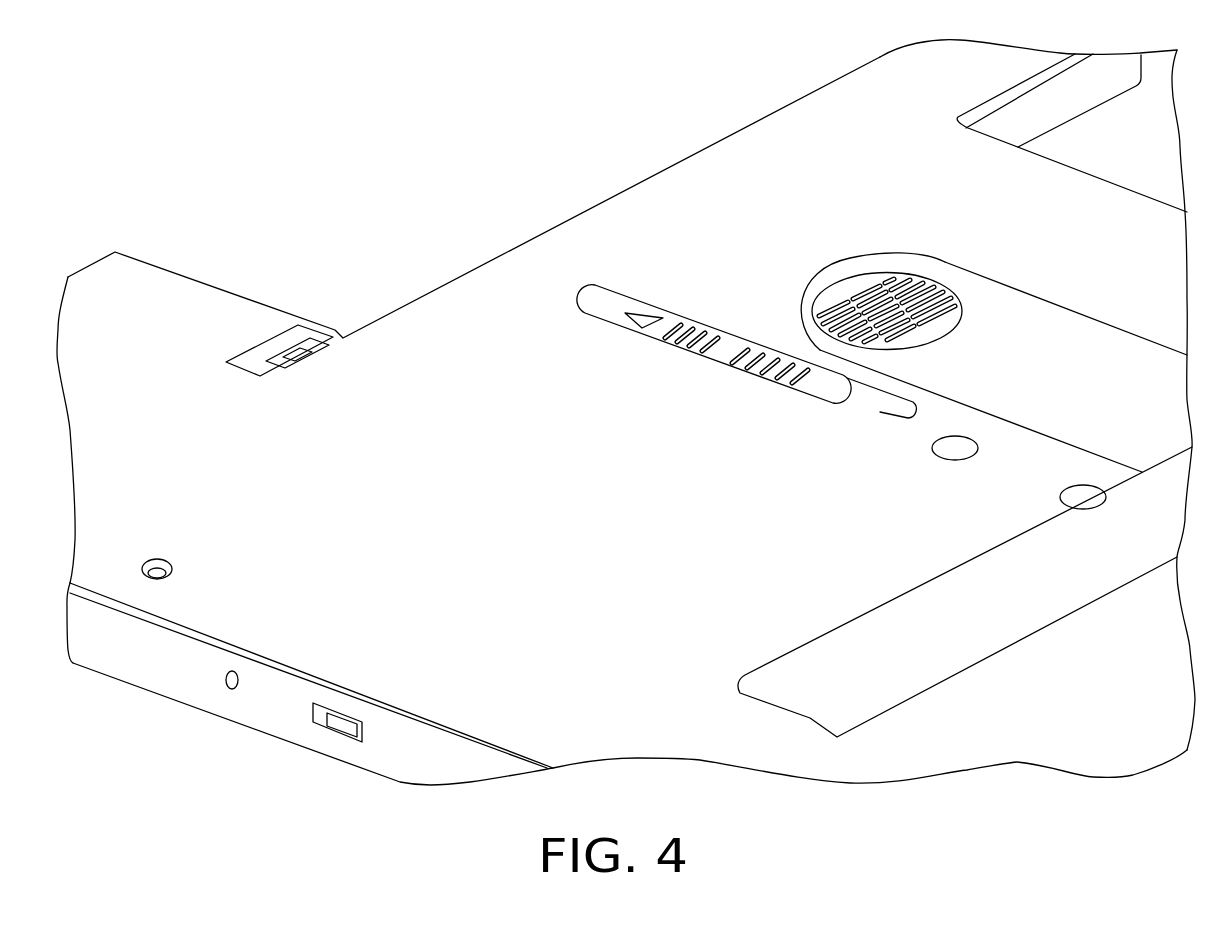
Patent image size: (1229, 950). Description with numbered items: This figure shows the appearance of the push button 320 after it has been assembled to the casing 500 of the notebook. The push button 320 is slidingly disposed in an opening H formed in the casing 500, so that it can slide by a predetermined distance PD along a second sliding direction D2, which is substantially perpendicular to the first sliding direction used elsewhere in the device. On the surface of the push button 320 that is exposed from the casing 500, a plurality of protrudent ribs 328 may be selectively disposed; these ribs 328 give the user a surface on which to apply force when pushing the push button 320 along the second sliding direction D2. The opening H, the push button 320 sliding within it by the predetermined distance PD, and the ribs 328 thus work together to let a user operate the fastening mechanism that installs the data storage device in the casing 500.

The push button 320 is at (640, 316).
The protrudent ribs 328 is at (688, 333).
The casing 500 is at (898, 560).
The second sliding direction D2 is at (185, 148).
The predetermined distance PD is at (904, 400).
The opening H is at (920, 462).